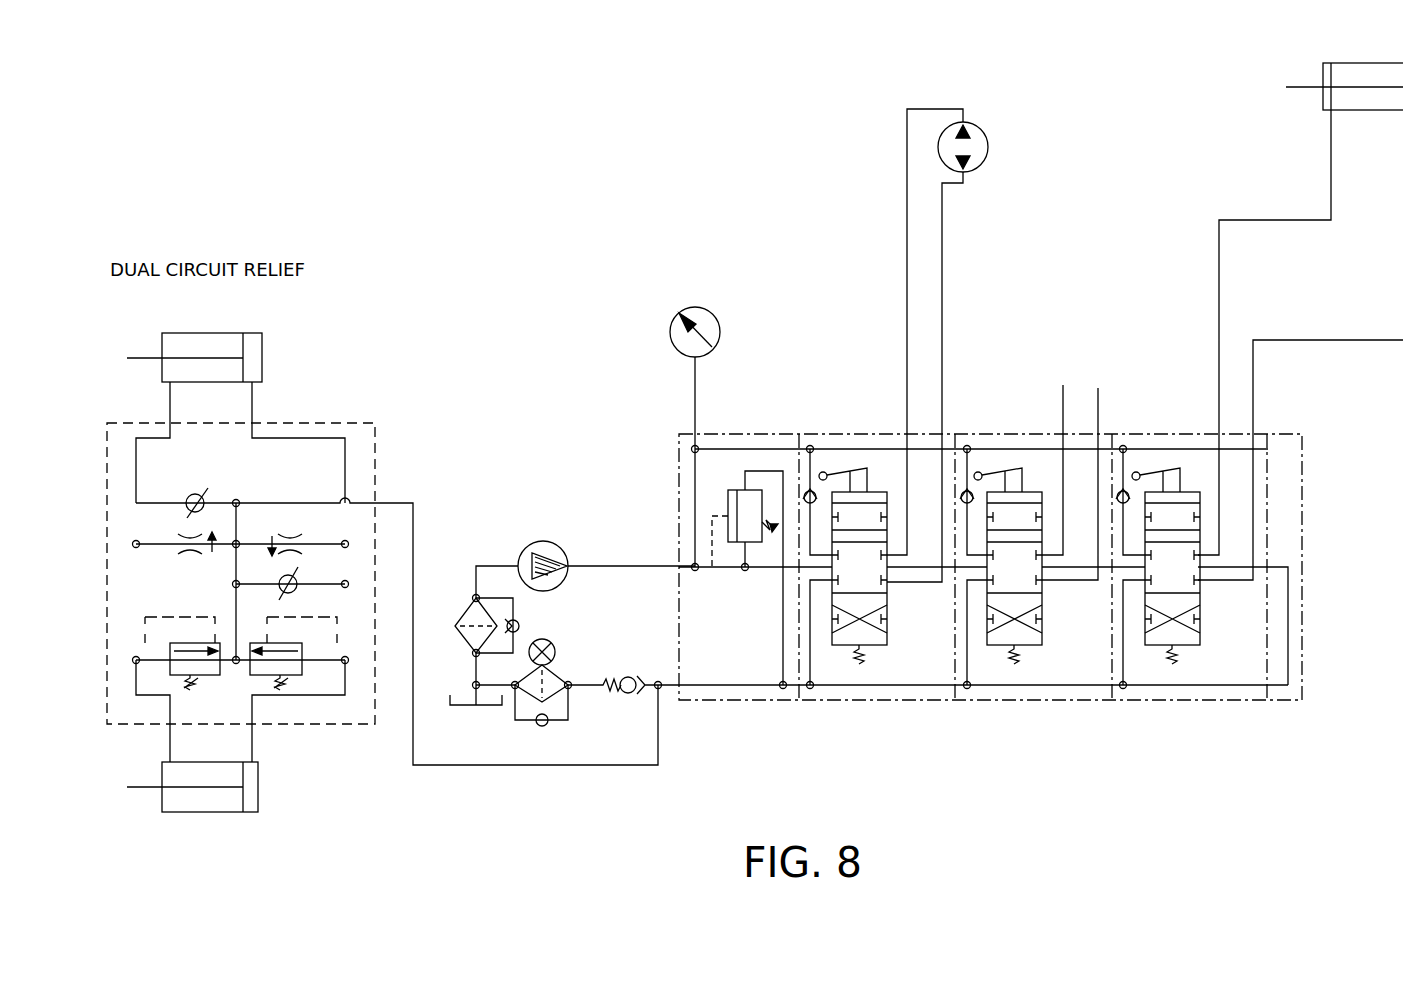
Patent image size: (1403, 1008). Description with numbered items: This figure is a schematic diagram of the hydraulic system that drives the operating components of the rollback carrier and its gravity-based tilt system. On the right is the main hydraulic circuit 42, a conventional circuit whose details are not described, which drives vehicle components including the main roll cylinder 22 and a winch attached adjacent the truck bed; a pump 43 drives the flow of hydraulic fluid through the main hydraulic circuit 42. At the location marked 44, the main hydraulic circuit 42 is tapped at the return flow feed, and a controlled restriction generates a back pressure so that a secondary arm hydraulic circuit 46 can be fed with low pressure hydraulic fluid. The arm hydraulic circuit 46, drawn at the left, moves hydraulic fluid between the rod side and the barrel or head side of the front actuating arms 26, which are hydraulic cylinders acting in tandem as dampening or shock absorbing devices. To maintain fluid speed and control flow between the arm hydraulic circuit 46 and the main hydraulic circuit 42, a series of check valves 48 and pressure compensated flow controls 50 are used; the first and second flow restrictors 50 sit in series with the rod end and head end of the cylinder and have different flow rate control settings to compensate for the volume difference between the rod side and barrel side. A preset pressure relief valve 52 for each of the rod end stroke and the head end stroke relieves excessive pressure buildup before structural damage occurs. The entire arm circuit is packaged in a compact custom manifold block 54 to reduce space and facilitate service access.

The main roll cylinder 22 is at (1326, 98).
The front actuating arm 26 is at (225, 333).
The main hydraulic circuit 42 is at (808, 210).
The pump 43 is at (545, 541).
The return flow feed tap 44 is at (614, 634).
The arm hydraulic circuit 46 is at (370, 295).
The check valve 48 is at (199, 496).
The pressure compensated flow control 50 is at (212, 522).
The pressure relief valve 52 is at (207, 678).
The manifold block 54 is at (355, 424).